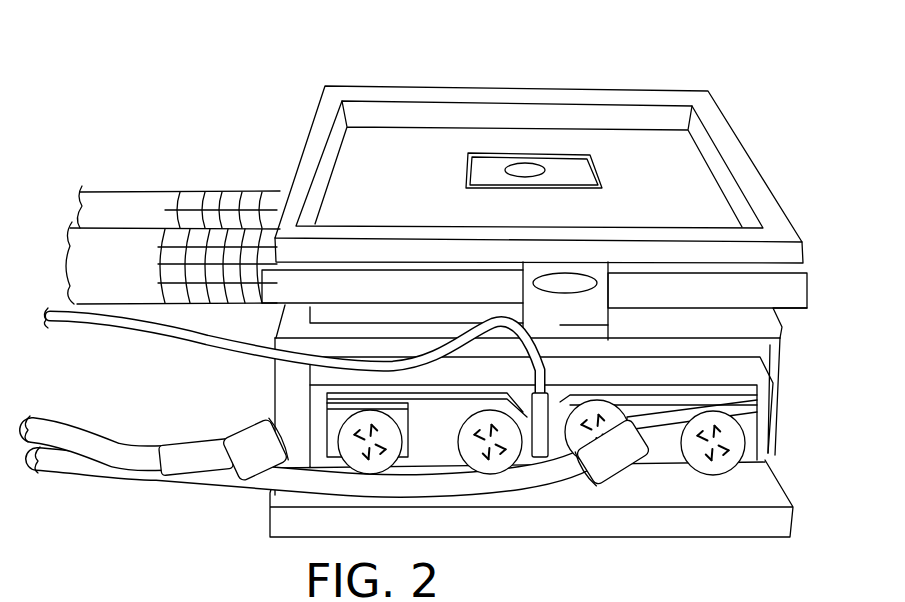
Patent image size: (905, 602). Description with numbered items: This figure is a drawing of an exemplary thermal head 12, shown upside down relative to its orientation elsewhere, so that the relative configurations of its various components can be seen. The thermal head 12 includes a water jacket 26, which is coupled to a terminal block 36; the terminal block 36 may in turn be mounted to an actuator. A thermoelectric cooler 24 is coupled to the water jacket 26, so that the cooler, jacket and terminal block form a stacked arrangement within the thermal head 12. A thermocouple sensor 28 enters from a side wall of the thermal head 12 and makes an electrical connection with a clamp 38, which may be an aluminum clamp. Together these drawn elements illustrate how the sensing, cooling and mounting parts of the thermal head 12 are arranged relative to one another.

The thermal head 12 is at (744, 98).
The thermoelectric cooler 24 is at (750, 340).
The water jacket 26 is at (277, 378).
The thermocouple sensor 28 is at (545, 460).
The terminal block 36 is at (768, 404).
The clamp 38 is at (525, 163).